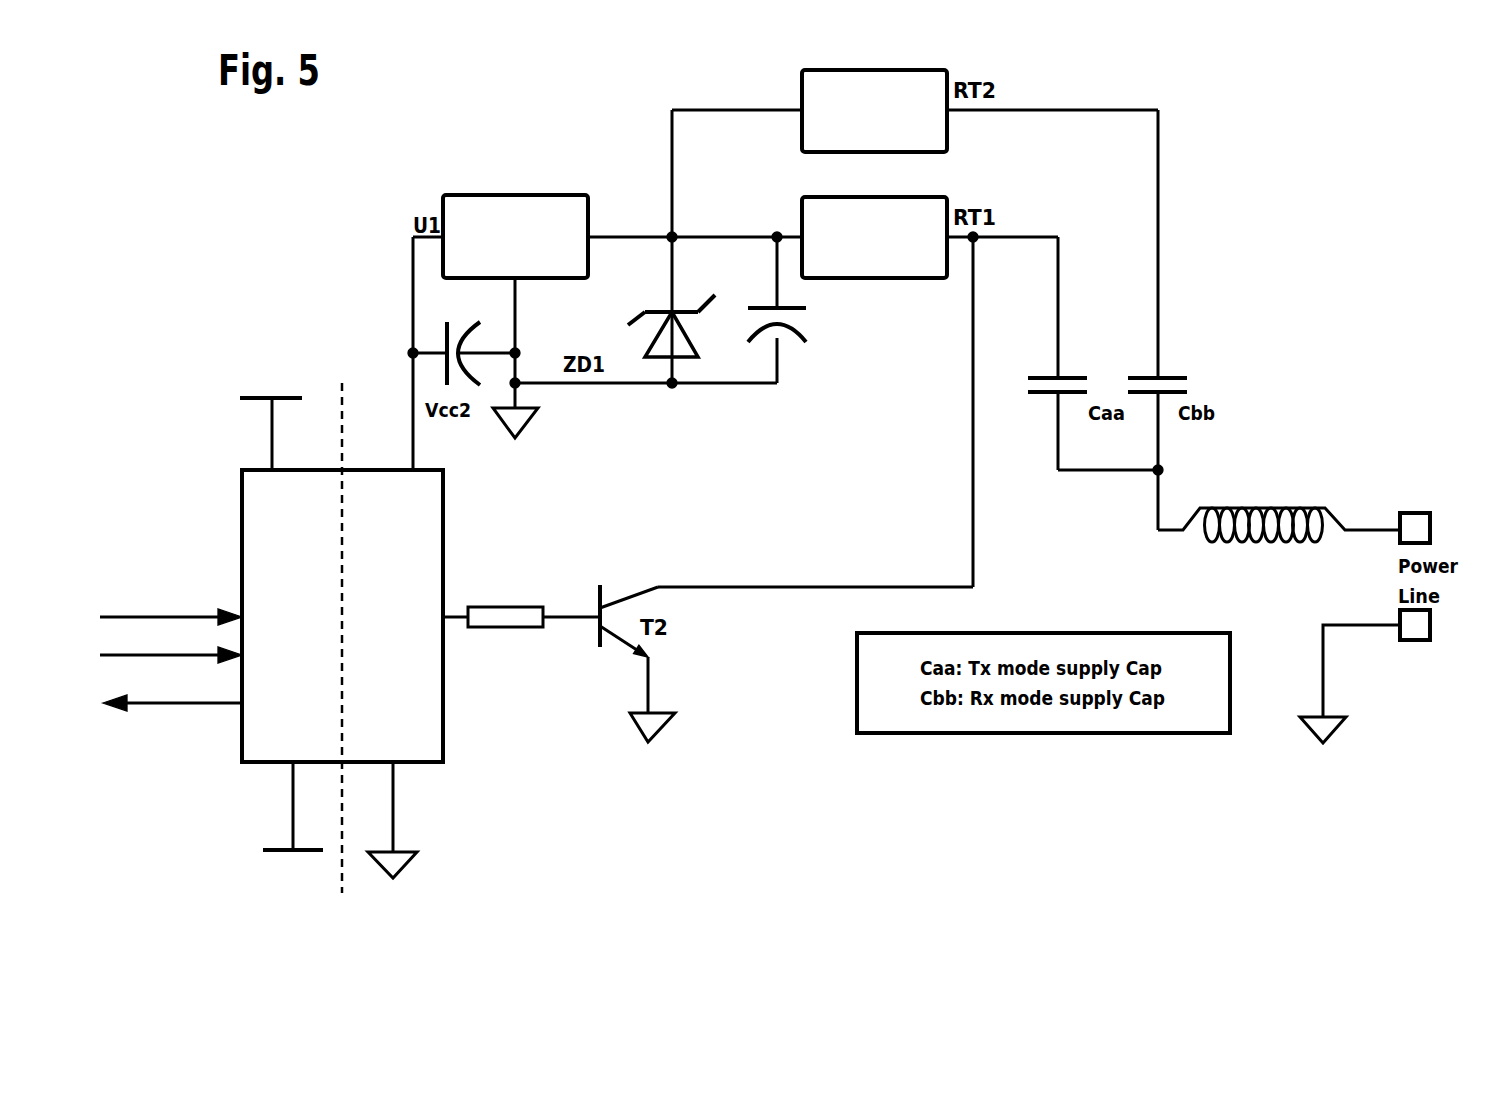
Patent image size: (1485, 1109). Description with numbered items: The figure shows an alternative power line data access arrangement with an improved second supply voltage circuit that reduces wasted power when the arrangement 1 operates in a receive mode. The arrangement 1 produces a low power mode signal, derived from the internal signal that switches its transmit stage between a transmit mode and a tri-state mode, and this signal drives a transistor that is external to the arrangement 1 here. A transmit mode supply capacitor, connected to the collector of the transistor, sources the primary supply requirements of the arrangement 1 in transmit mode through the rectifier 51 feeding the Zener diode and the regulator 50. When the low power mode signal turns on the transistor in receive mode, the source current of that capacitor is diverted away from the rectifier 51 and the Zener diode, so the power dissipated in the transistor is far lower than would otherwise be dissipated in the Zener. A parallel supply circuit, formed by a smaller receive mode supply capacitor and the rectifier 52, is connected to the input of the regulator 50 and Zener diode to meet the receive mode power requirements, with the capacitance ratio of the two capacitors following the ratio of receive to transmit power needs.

The power line data access arrangement 1 is at (443, 700).
The regulator 50 is at (546, 195).
The rectifier 51 is at (792, 218).
The rectifier 52 is at (947, 135).